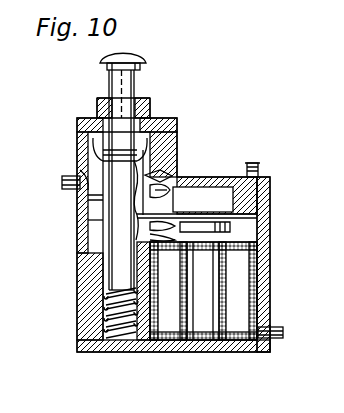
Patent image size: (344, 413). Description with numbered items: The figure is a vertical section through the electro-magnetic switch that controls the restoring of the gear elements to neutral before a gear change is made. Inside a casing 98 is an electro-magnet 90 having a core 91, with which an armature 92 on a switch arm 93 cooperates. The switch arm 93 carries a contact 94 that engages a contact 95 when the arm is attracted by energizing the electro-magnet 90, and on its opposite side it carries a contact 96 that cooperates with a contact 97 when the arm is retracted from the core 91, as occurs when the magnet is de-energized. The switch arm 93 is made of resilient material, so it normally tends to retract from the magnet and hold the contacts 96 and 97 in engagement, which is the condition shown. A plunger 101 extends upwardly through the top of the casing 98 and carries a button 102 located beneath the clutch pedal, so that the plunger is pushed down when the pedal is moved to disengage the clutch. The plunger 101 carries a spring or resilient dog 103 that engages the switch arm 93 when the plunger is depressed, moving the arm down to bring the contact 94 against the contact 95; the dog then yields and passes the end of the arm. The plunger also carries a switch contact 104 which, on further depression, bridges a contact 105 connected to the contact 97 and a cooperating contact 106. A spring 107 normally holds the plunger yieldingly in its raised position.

The electro-magnet 90 is at (247, 268).
The core 91 is at (262, 237).
The armature 92 is at (212, 225).
The switch arm 93 is at (215, 213).
The contact 94 is at (134, 214).
The contact 95 is at (134, 236).
The contact 96 is at (186, 196).
The contact 97 is at (180, 172).
The casing 98 is at (80, 237).
The plunger 101 is at (90, 207).
The button 102 is at (148, 58).
The resilient dog 103 is at (180, 150).
The switch contact 104 is at (95, 157).
The contact 105 is at (168, 185).
The contact 106 is at (66, 180).
The spring 107 is at (105, 318).